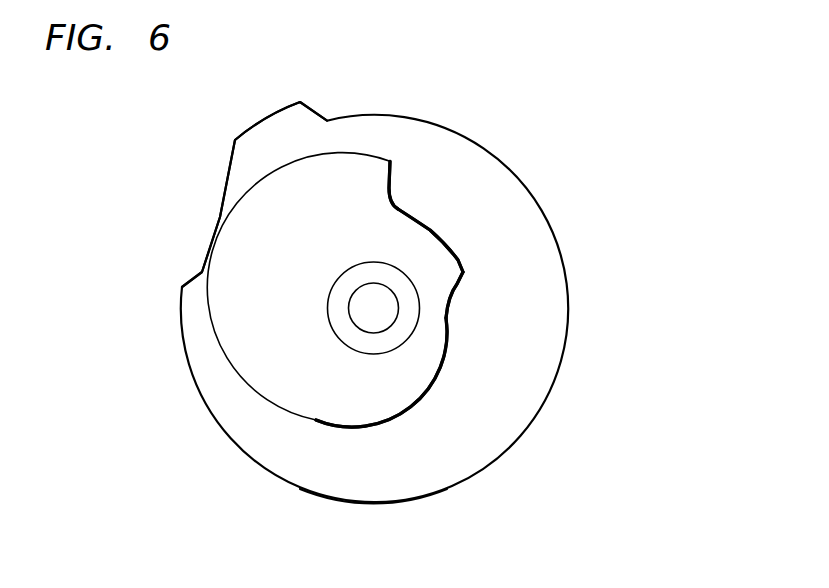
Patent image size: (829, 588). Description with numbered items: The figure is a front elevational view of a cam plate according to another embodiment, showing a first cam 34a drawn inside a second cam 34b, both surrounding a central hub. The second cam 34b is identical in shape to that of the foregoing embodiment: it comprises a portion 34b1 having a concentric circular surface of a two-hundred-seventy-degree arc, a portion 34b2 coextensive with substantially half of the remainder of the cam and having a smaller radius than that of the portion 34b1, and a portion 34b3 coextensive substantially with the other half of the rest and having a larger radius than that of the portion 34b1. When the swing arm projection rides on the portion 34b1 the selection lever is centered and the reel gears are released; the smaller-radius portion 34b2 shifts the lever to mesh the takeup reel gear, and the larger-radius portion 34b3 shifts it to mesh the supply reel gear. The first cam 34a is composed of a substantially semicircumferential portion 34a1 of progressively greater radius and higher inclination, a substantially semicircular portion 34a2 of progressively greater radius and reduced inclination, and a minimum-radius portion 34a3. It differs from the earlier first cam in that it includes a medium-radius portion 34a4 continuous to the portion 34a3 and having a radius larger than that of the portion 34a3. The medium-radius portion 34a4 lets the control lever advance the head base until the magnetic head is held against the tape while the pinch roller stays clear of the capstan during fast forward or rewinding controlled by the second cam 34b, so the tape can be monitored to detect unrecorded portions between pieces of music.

The first cam 34a is at (268, 350).
The substantially semicircumferential portion 34a1 is at (292, 398).
The substantially semicircular portion 34a2 is at (375, 157).
The minimum-radius portion 34a3 is at (393, 203).
The medium-radius portion 34a4 is at (465, 272).
The second cam 34b is at (528, 237).
The concentric circular surface portion 34b1 is at (353, 502).
The smaller-radius portion 34b2 is at (213, 233).
The larger-radius portion 34b3 is at (267, 125).